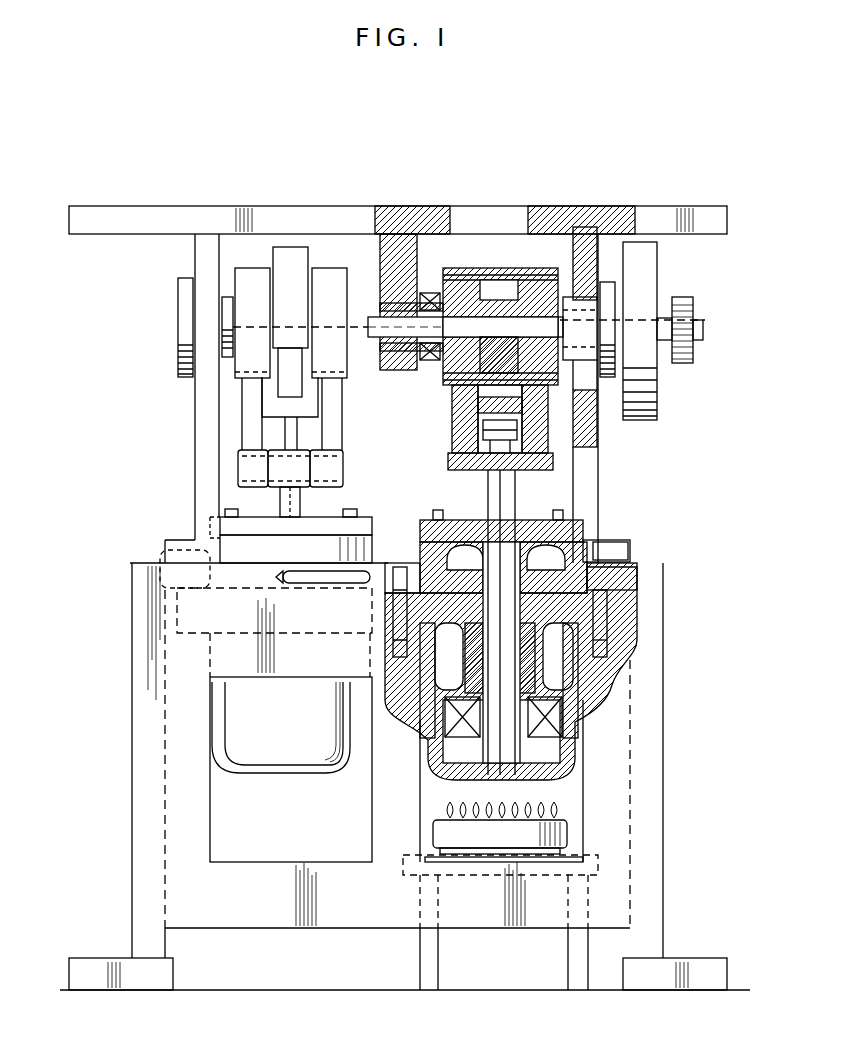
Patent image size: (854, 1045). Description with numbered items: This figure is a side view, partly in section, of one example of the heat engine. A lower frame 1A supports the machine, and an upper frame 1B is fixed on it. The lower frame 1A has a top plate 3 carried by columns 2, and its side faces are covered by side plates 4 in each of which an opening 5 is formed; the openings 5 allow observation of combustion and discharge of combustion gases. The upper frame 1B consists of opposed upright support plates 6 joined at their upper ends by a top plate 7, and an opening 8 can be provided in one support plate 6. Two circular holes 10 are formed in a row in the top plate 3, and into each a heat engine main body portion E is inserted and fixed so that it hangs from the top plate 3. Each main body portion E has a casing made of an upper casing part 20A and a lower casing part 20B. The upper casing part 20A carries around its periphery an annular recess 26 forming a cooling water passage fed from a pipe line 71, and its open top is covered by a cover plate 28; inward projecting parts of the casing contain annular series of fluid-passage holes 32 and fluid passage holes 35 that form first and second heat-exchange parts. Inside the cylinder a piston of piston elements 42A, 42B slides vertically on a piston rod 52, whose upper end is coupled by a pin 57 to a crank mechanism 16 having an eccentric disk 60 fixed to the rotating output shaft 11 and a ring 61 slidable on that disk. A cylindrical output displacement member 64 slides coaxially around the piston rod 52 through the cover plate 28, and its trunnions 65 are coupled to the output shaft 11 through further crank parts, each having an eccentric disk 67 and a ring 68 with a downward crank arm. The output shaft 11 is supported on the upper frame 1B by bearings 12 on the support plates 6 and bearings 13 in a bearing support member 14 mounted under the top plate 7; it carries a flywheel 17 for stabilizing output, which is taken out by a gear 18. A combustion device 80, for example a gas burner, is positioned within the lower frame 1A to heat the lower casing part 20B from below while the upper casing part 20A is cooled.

The lower frame 1A is at (140, 724).
The upper frame 1B is at (196, 411).
The columns 2 is at (637, 625).
The top plate 3 is at (640, 575).
The side plates 4 is at (285, 928).
The opening 5 is at (583, 800).
The upright support plates 6 is at (195, 469).
The top plate 7 is at (345, 206).
The opening 8 is at (586, 463).
The circular holes 10 is at (165, 553).
The rotating output shaft 11 is at (392, 352).
The bearings 12 is at (178, 340).
The bearings 13 is at (426, 352).
The bearing support member 14 is at (428, 206).
The crank mechanism 16 is at (337, 392).
The flywheel 17 is at (655, 263).
The gear 18 is at (693, 316).
The upper casing part 20A is at (590, 541).
The lower casing part 20B is at (575, 760).
The annular recess 26 is at (420, 547).
The cover plate 28 is at (452, 518).
The fluid-passage holes 32 is at (385, 600).
The fluid passage holes 35 is at (430, 738).
The piston element 42A is at (557, 660).
The piston element 42B is at (575, 730).
The piston rod 52 is at (500, 773).
The pin 57 is at (598, 441).
The eccentric disk 60 is at (500, 338).
The ring 61 is at (483, 305).
The output displacement member 64 is at (285, 505).
The trunnions 65 is at (552, 470).
The eccentric disk 67 is at (548, 240).
The ring 68 is at (586, 236).
The pipe line 71 is at (294, 584).
The combustion device 80 is at (433, 836).
The main body portion E is at (290, 773).